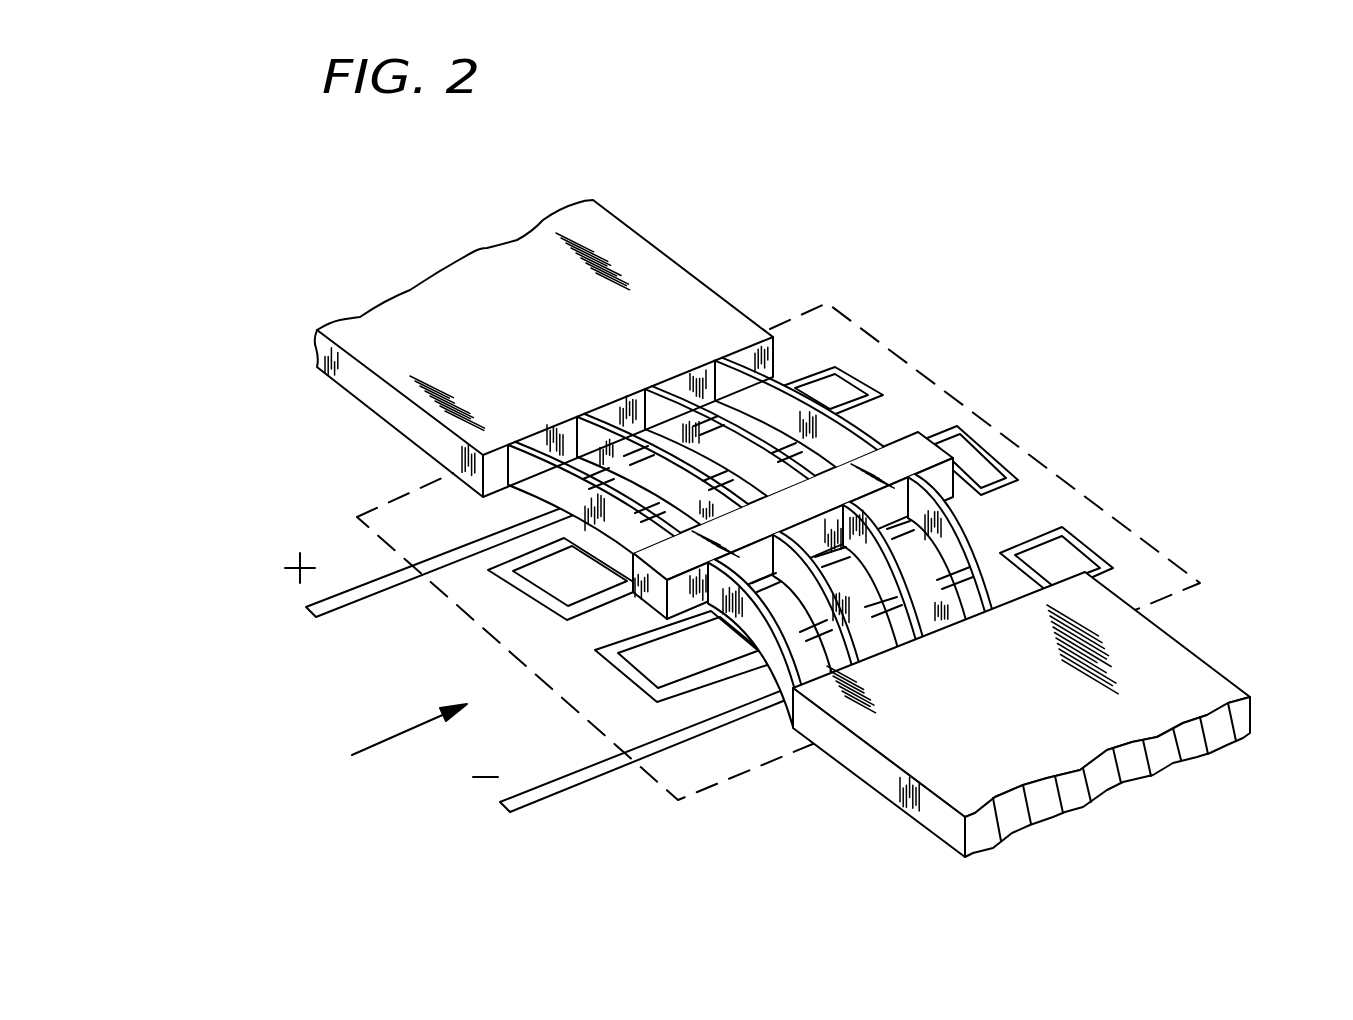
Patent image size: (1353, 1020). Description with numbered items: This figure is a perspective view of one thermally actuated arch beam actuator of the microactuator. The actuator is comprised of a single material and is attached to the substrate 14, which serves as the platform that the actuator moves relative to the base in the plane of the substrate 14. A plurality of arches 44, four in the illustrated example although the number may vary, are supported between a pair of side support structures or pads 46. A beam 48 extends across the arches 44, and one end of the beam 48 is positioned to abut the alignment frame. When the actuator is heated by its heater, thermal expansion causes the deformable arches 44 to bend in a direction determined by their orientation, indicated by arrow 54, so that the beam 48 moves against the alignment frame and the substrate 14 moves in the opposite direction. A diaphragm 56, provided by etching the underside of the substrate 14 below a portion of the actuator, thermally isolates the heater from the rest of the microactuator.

The substrate 14 is at (270, 543).
The arches 44 is at (780, 380).
The side support structures or pads 46 is at (400, 412).
The beam 48 is at (645, 605).
The arrow 54 is at (416, 723).
The diaphragm 56 is at (940, 382).